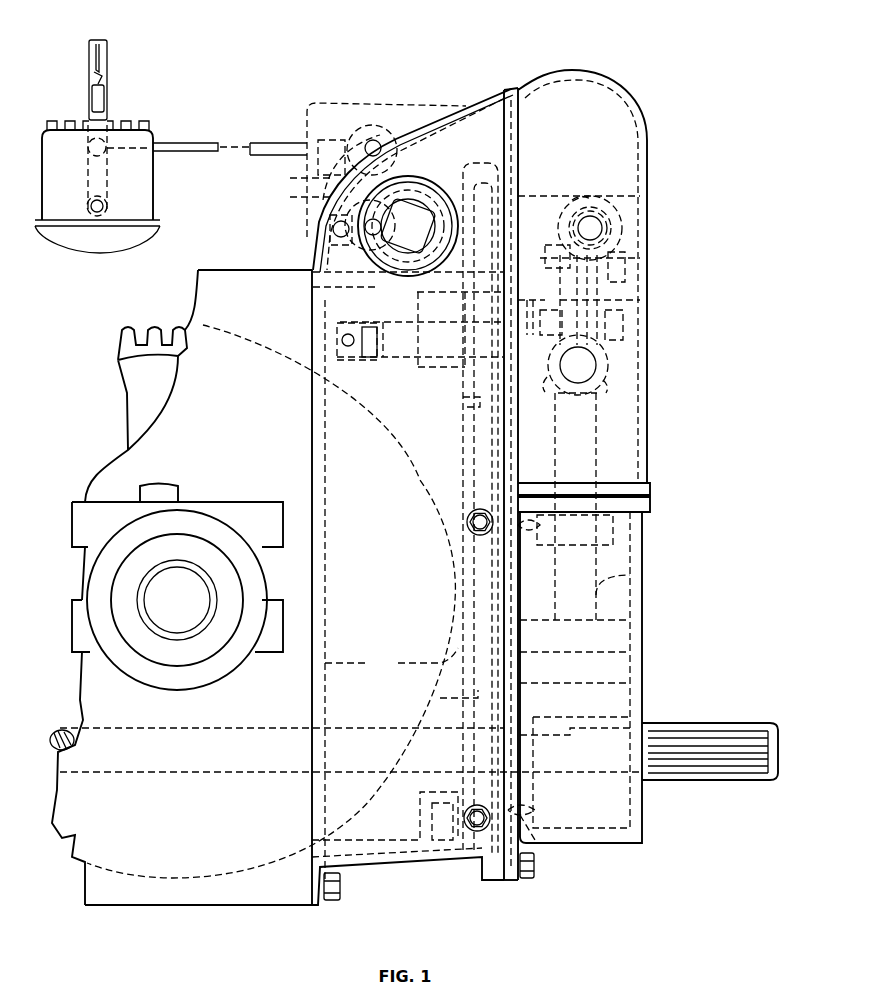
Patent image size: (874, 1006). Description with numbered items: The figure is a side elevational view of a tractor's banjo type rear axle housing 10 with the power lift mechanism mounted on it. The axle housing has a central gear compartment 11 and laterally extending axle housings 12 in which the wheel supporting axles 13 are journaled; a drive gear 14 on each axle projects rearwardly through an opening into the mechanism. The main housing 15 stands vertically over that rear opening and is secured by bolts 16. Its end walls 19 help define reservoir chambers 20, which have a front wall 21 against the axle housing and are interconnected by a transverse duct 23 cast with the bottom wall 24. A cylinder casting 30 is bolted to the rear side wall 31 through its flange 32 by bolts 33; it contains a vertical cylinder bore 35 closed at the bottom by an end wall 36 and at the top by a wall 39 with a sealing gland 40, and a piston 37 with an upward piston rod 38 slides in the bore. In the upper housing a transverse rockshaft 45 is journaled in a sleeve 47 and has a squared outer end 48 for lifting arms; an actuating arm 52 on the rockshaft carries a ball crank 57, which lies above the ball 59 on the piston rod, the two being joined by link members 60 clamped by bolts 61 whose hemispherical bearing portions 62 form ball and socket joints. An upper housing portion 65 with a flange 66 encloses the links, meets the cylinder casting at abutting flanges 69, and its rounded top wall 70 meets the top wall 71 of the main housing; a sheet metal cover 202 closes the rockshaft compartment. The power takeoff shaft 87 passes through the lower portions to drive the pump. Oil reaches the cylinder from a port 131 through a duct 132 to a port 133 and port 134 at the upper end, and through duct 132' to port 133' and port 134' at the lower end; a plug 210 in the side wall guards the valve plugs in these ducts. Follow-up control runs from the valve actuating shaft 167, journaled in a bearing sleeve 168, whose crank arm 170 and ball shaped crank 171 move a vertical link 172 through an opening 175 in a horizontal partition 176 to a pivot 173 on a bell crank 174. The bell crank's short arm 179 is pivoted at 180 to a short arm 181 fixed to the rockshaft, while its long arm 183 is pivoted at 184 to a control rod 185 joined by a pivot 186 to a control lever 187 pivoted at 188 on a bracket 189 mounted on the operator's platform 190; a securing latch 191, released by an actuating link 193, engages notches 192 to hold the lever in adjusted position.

The rear axle housing 10 is at (279, 912).
The central gear compartment 11 is at (233, 757).
The axle housing 12 is at (195, 518).
The wheel supporting axle 13 is at (169, 609).
The drive gear 14 is at (122, 362).
The main housing 15 is at (371, 593).
The bolt 16 is at (341, 892).
The end wall 19 is at (402, 832).
The reservoir chamber 20 is at (272, 601).
The front wall 21 is at (327, 722).
The transverse passageway or duct 23 is at (440, 840).
The bottom wall 24 is at (345, 835).
The cylinder casting 30 is at (645, 594).
The rear side wall 31 is at (505, 760).
The flange 32 is at (508, 882).
The bolt 33 is at (535, 870).
The cylinder bore 35 is at (642, 620).
The end wall 36 is at (572, 828).
The piston 37 is at (640, 720).
The piston rod 38 is at (632, 574).
The wall 39 is at (642, 524).
The sealing gland 40 is at (642, 547).
The rockshaft 45 is at (408, 226).
The sleeve 47 is at (415, 196).
The squared outer end 48 is at (425, 206).
The actuating arm 52 is at (530, 196).
The ball crank 57 is at (603, 228).
The ball 59 is at (597, 366).
The link member 60 is at (600, 300).
The bolt 61 is at (625, 325).
The hemispherical bearing portion 62 is at (600, 382).
The upper housing portion 65 is at (655, 126).
The flange 66 is at (519, 112).
The abutting flange 69 is at (650, 505).
The rounded top wall 70 is at (595, 80).
The top wall 71 is at (465, 124).
The power takeoff shaft 87 is at (290, 772).
The port 131 is at (490, 170).
The duct 132 is at (451, 413).
The duct 132' is at (438, 695).
The port 133 is at (534, 546).
The port 133' is at (535, 802).
The port 134 is at (556, 506).
The port 134' is at (547, 842).
The valve actuating shaft 167 is at (530, 311).
The bearing sleeve 168 is at (432, 368).
The crank arm 170 is at (380, 325).
The ball shaped crank 171 is at (340, 330).
The link 172 is at (340, 300).
The pivot 173 is at (332, 229).
The bell crank 174 is at (320, 178).
The opening 175 is at (360, 328).
The horizontal housing partition 176 is at (425, 325).
The short arm 179 is at (312, 262).
The pivot 180 is at (380, 200).
The short arm 181 is at (322, 197).
The long arm 183 is at (325, 142).
The pivot 184 is at (382, 145).
The control rod 185 is at (257, 140).
The pivot 186 is at (104, 157).
The control lever 187 is at (108, 62).
The pivot 188 is at (104, 206).
The bracket 189 is at (145, 161).
The operator's platform 190 is at (150, 224).
The securing latch 191 is at (104, 104).
The notches 192 is at (72, 128).
The actuating link 193 is at (93, 55).
The sheet metal cover 202 is at (370, 103).
The plug 210 is at (477, 832).